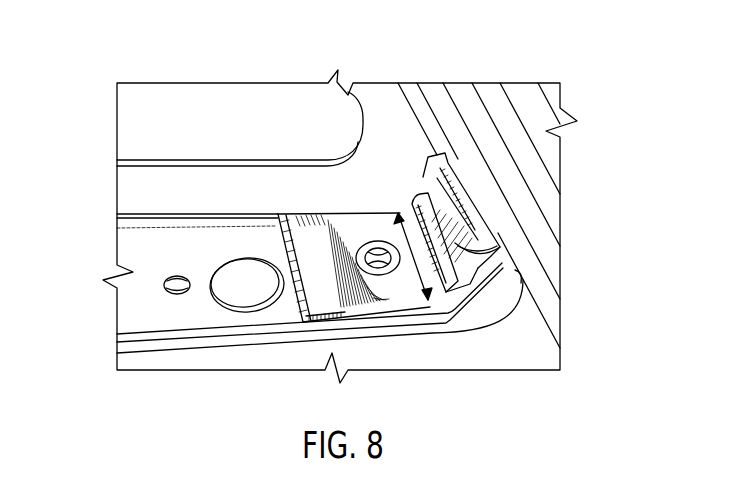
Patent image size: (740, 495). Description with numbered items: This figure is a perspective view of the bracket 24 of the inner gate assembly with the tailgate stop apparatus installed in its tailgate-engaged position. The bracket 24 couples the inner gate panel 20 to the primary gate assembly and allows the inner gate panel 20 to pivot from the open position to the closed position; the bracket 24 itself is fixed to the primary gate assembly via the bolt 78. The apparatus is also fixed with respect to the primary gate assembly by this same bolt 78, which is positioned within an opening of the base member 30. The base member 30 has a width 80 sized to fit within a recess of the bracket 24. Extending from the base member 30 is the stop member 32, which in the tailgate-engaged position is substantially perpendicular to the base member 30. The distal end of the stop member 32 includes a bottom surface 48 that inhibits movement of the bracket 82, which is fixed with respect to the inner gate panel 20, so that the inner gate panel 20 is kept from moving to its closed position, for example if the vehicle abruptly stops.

The inner gate panel 20 is at (480, 105).
The bracket 24 is at (140, 242).
The base member 30 is at (295, 213).
The stop member 32 is at (413, 212).
The bottom surface 48 is at (457, 248).
The bolt 78 is at (378, 240).
The width 80 is at (427, 302).
The bracket 82 is at (442, 172).